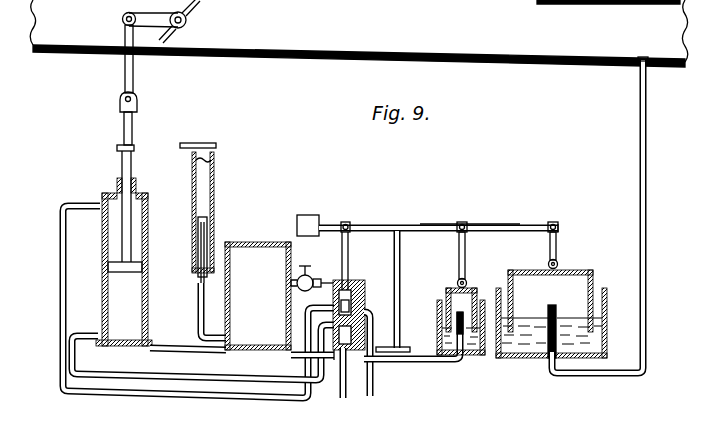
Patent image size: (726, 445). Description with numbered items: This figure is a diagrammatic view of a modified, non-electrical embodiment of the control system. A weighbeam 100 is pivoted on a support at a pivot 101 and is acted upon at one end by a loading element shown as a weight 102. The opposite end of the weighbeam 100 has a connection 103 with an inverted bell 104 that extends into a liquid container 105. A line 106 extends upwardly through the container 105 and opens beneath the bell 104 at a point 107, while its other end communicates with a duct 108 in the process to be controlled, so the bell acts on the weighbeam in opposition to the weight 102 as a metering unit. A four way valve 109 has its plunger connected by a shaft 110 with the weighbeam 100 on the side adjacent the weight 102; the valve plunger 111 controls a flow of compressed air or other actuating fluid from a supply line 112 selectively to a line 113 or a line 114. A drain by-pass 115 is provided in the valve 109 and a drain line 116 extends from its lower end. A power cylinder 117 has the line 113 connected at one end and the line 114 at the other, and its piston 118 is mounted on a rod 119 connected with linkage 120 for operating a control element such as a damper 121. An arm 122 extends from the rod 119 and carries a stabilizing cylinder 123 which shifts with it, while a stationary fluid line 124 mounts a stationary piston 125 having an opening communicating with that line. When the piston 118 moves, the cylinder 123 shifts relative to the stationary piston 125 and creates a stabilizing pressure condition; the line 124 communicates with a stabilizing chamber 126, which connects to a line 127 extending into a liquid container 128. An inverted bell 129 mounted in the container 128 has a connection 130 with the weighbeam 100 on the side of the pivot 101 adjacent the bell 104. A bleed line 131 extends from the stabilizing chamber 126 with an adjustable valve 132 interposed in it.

The weighbeam 100 is at (441, 227).
The pivot 101 is at (395, 226).
The weight 102 is at (308, 216).
The connection 103 is at (557, 243).
The inverted bell 104 is at (573, 272).
The liquid container 105 is at (511, 359).
The line 106 is at (647, 189).
The line end beneath bell 107 is at (548, 307).
The duct 108 is at (576, 48).
The four way valve 109 is at (356, 288).
The shaft 110 is at (348, 252).
The valve plunger 111 is at (331, 362).
The line 112 is at (373, 388).
The line 113 is at (224, 376).
The line 114 is at (60, 258).
The drain by-pass 115 is at (362, 294).
The drain line 116 is at (345, 400).
The power cylinder 117 is at (148, 304).
The piston 118 is at (142, 272).
The rod 119 is at (133, 129).
The linkage 120 is at (127, 78).
The damper 121 is at (196, 2).
The arm 122 is at (190, 148).
The stabilizing cylinder 123 is at (209, 157).
The stationary fluid line 124 is at (198, 333).
The stationary piston 125 is at (205, 213).
The stabilizing chamber 126 is at (272, 248).
The line 127 is at (428, 374).
The liquid container 128 is at (440, 330).
The inverted bell 129 is at (446, 294).
The connection 130 is at (466, 255).
The bleed line 131 is at (318, 281).
The adjustable valve 132 is at (305, 268).